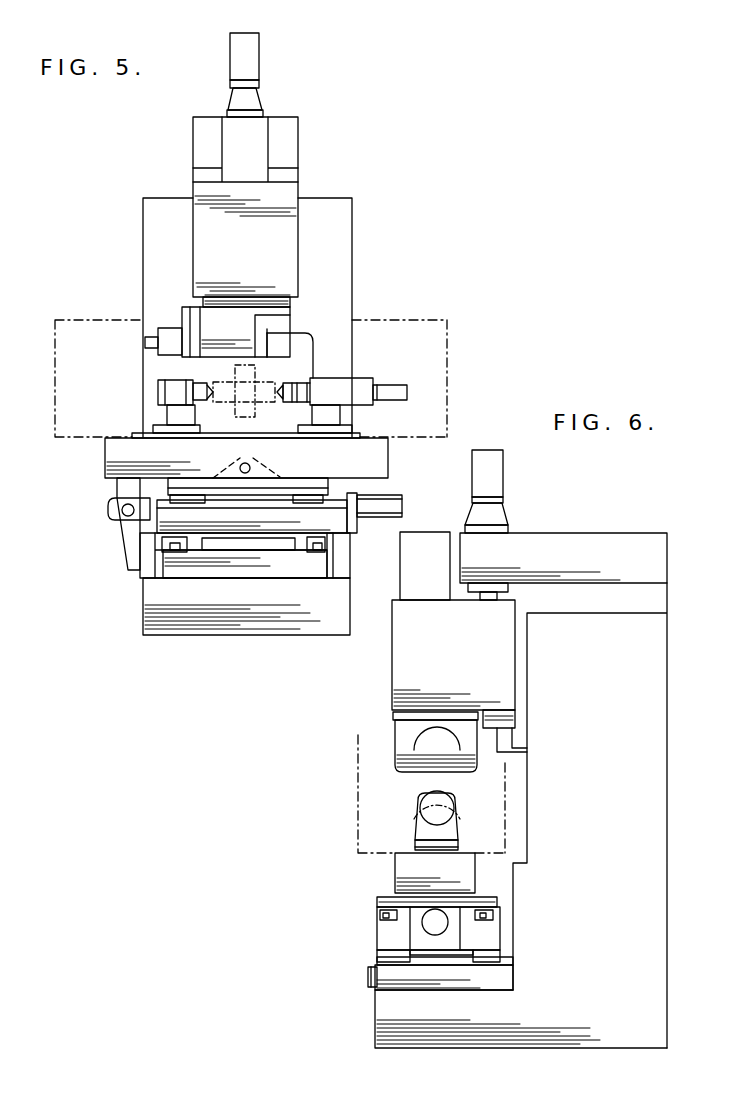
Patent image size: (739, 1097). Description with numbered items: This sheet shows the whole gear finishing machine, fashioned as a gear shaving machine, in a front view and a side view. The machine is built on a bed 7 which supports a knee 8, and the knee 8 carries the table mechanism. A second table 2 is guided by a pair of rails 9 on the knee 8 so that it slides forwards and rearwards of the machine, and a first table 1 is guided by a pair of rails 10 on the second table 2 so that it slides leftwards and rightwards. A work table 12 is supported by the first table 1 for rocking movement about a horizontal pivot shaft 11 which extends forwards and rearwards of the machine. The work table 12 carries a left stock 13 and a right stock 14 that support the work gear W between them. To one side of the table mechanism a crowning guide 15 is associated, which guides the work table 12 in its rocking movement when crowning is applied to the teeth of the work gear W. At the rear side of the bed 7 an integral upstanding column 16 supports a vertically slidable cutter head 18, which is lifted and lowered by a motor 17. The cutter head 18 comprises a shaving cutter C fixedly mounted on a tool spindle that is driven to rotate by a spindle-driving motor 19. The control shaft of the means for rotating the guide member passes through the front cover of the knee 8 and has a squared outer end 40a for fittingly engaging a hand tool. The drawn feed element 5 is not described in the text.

In FIG. 5, the first table 1 is at (330, 473).
In FIG. 6, the first table 1 is at (390, 895).
In FIG. 5, the second table 2 is at (230, 520).
In FIG. 6, the second table 2 is at (385, 930).
In FIG. 5, the feed cylinder 5 is at (387, 503).
In FIG. 6, the feed cylinder 5 is at (440, 927).
In FIG. 5, the bed 7 is at (275, 610).
In FIG. 6, the bed 7 is at (375, 1035).
In FIG. 5, the knee 8 is at (307, 562).
In FIG. 6, the knee 8 is at (403, 975).
In FIG. 5, the rails 9 is at (168, 552).
In FIG. 6, the rails 9 is at (457, 963).
In FIG. 5, the rails 10 is at (263, 502).
In FIG. 6, the rails 10 is at (378, 915).
In FIG. 5, the horizontal pivot shaft 11 is at (253, 462).
In FIG. 5, the work table 12 is at (118, 448).
In FIG. 6, the work table 12 is at (503, 857).
In FIG. 5, the left stock 13 is at (172, 383).
In FIG. 5, the right stock 14 is at (330, 388).
In FIG. 6, the right stock 14 is at (440, 808).
In FIG. 5, the crowning guide 15 is at (108, 513).
In FIG. 5, the column 16 is at (330, 273).
In FIG. 6, the column 16 is at (602, 630).
In FIG. 5, the motor 17 is at (248, 65).
In FIG. 6, the motor 17 is at (492, 477).
In FIG. 5, the cutter head 18 is at (278, 212).
In FIG. 6, the cutter head 18 is at (425, 660).
In FIG. 6, the spindle-driving motor 19 is at (428, 565).
In FIG. 6, the squared outer end 40a is at (368, 978).
In FIG. 6, the shaving cutter C is at (412, 790).
In FIG. 5, the work gear W is at (248, 372).
In FIG. 6, the work gear W is at (460, 795).